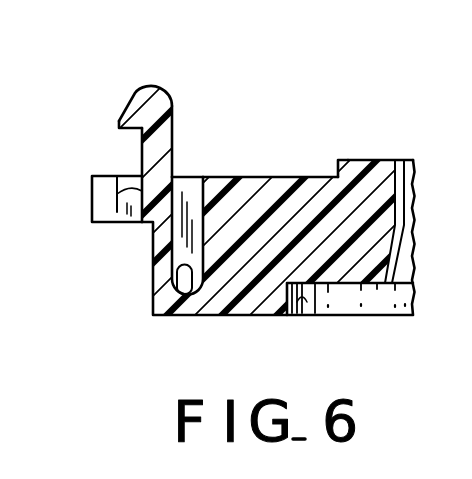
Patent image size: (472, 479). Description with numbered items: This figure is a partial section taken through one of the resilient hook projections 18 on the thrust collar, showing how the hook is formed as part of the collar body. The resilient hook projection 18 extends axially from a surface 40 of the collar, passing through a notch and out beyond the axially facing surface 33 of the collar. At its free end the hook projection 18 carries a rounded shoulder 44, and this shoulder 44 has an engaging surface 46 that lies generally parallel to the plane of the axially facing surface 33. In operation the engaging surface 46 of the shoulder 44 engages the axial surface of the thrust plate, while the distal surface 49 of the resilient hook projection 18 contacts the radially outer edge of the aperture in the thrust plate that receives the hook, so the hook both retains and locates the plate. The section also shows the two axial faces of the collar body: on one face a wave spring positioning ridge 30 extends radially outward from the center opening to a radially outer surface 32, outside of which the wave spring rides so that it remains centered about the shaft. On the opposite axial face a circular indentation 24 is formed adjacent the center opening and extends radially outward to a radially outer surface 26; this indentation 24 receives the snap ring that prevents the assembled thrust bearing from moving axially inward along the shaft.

The resilient hook projection 18 is at (178, 78).
The rounded shoulder 44 is at (137, 94).
The engaging surface 46 is at (131, 131).
The distal surface 49 is at (116, 194).
The surface 40 is at (177, 272).
The axially facing surface 33 is at (258, 177).
The radially outer surface 32 is at (337, 173).
The wave spring positioning ridge 30 is at (371, 160).
The radially outer surface 26 is at (307, 313).
The circular indentation 24 is at (376, 302).